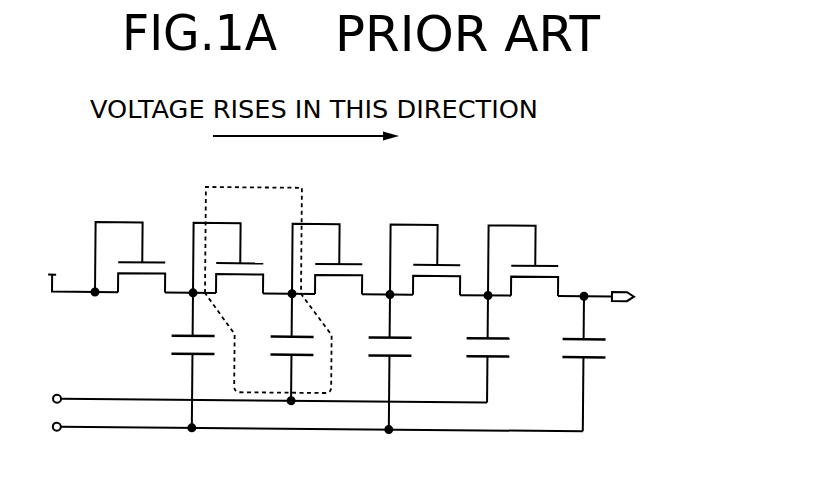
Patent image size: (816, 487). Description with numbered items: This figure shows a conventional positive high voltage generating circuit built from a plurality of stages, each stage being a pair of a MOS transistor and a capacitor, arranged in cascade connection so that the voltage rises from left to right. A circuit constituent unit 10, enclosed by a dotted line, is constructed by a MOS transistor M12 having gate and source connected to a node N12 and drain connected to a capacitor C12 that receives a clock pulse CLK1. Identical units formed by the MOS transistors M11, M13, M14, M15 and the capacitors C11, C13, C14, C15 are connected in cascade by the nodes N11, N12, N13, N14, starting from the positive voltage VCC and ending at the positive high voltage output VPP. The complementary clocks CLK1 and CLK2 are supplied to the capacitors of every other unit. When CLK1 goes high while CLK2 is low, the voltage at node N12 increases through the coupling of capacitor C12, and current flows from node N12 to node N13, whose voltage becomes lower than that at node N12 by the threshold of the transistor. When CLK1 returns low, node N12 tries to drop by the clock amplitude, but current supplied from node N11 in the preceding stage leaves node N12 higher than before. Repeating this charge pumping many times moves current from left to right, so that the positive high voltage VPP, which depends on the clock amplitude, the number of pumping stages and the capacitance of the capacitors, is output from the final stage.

The circuit constituent unit 10 is at (268, 275).
The MOS transistor M11 is at (130, 242).
The MOS transistor M12 is at (232, 244).
The MOS transistor M13 is at (329, 245).
The MOS transistor M14 is at (426, 246).
The MOS transistor M15 is at (523, 246).
The node N11 is at (143, 307).
The node N12 is at (270, 309).
The node N13 is at (368, 310).
The node N14 is at (466, 311).
The capacitor C11 is at (177, 362).
The capacitor C12 is at (276, 349).
The capacitor C13 is at (376, 364).
The capacitor C14 is at (473, 349).
The capacitor C15 is at (568, 364).
The positive voltage VCC is at (68, 267).
The positive high voltage VPP is at (651, 298).
The clock CLK1 is at (270, 385).
The clock CLK2 is at (318, 444).